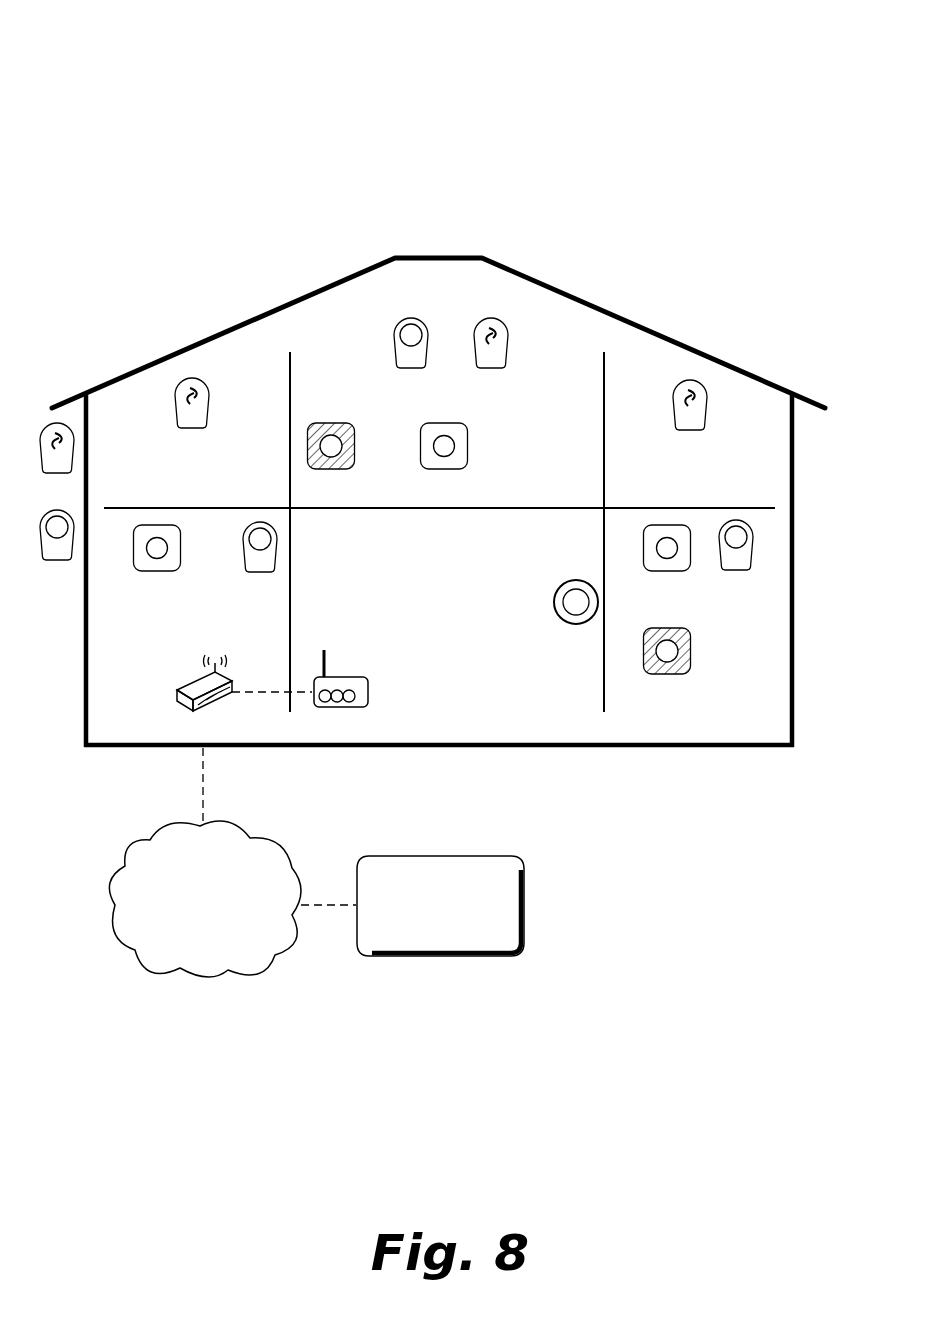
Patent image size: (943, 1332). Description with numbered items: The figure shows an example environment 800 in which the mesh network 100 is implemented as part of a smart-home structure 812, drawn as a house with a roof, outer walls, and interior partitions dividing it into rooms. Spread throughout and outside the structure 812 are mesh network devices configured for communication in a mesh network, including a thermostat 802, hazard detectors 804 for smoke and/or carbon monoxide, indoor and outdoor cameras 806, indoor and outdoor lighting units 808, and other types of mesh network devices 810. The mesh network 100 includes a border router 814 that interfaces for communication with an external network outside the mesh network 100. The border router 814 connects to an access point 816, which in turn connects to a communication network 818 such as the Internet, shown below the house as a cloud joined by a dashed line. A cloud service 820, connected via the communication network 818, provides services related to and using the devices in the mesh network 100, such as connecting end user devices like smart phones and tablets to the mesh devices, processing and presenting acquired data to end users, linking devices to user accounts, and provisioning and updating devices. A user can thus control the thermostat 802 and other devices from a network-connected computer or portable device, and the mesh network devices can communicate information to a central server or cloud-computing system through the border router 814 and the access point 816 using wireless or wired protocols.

The environment 800 is at (176, 74).
The mesh network 100 is at (356, 350).
The structure 812 is at (203, 338).
The thermostat 802 is at (559, 652).
The hazard detectors 804 is at (427, 492).
The cameras 806 is at (394, 394).
The lighting units 808 is at (474, 394).
The mesh network devices 810 is at (314, 492).
The border router 814 is at (324, 732).
The access point 816 is at (186, 738).
The communication network 818 is at (187, 958).
The cloud service 820 is at (423, 940).